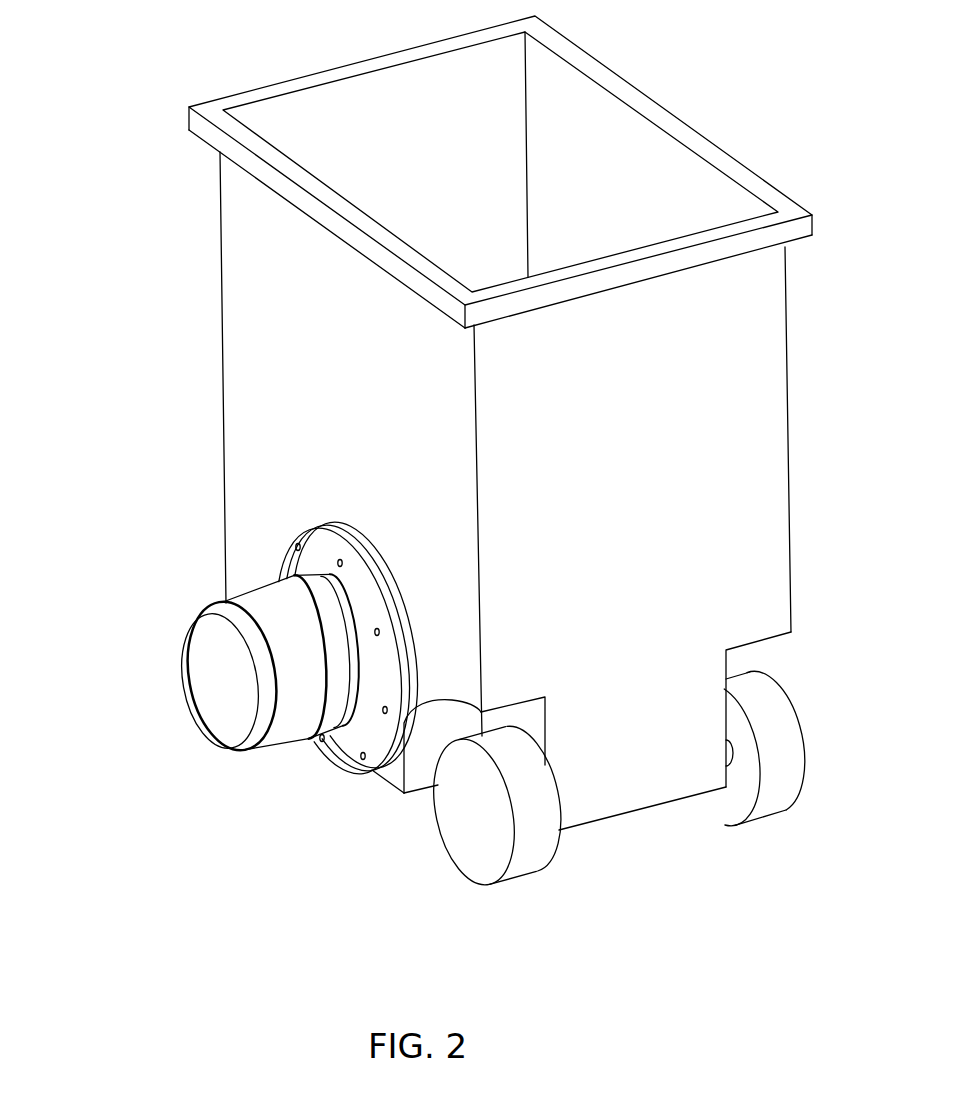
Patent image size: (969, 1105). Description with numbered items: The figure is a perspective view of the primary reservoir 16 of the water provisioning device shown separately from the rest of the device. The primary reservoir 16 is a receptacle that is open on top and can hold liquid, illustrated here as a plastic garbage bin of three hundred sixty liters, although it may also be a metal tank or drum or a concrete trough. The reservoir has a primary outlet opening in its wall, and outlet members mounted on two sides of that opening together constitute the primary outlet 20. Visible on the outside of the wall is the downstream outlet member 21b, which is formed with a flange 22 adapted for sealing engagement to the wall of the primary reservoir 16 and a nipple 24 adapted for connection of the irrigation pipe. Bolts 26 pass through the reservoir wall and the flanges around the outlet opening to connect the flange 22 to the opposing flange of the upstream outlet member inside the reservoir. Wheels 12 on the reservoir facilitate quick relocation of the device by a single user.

The caster wheels 12 is at (477, 818).
The primary reservoir 16 is at (723, 490).
The primary outlet 20 is at (233, 698).
The downstream outlet member 21b is at (183, 592).
The flange 22 is at (288, 567).
The nipple 24 is at (287, 720).
The bolts 26 is at (316, 742).